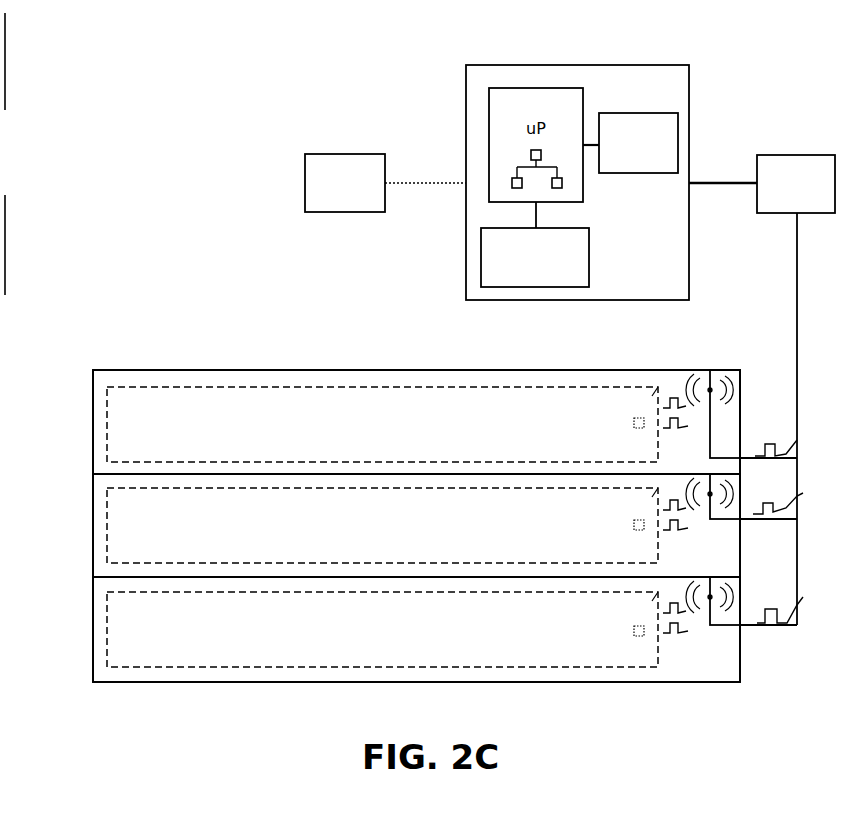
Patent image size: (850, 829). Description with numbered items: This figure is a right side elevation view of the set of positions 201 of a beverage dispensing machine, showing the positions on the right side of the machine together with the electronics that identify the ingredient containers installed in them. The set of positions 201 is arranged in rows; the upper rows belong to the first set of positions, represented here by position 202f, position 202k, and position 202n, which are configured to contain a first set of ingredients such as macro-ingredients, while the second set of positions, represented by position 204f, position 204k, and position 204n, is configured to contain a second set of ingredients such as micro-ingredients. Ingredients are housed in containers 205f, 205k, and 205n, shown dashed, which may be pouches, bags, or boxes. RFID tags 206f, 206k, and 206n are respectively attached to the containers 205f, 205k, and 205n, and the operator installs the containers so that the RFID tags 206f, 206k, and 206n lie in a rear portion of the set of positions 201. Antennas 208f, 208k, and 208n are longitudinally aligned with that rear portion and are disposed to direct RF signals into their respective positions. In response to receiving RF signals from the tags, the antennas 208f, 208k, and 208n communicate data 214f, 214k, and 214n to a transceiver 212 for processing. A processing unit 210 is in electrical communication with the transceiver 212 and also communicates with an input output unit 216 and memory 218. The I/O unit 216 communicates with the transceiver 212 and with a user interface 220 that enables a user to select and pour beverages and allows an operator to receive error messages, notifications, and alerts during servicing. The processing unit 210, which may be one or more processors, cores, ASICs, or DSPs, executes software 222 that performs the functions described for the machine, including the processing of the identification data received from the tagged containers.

The set of positions 201 is at (218, 370).
The position 202f is at (93, 435).
The position 202k is at (93, 533).
The position 202n is at (93, 636).
The position 204f is at (659, 390).
The position 204k is at (660, 491).
The position 204n is at (662, 595).
The container 205f is at (107, 398).
The container 205k is at (107, 502).
The container 205n is at (107, 606).
The RFID tag 206f is at (630, 428).
The RFID tag 206k is at (630, 529).
The RFID tag 206n is at (630, 634).
The antenna 208f is at (713, 370).
The antenna 208k is at (713, 490).
The antenna 208n is at (713, 594).
The processing unit 210 is at (532, 88).
The transceiver 212 is at (796, 155).
The data 214f is at (748, 428).
The data 214k is at (752, 520).
The data 214n is at (752, 625).
The input output (I/O) unit 216 is at (660, 115).
The memory 218 is at (550, 287).
The user interface 220 is at (322, 154).
The software 222 is at (516, 158).